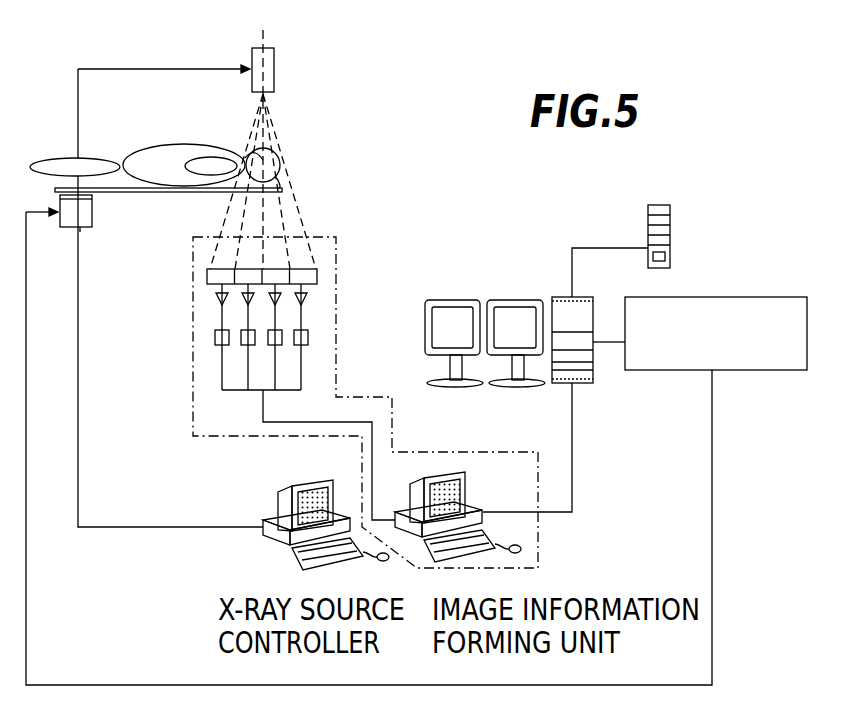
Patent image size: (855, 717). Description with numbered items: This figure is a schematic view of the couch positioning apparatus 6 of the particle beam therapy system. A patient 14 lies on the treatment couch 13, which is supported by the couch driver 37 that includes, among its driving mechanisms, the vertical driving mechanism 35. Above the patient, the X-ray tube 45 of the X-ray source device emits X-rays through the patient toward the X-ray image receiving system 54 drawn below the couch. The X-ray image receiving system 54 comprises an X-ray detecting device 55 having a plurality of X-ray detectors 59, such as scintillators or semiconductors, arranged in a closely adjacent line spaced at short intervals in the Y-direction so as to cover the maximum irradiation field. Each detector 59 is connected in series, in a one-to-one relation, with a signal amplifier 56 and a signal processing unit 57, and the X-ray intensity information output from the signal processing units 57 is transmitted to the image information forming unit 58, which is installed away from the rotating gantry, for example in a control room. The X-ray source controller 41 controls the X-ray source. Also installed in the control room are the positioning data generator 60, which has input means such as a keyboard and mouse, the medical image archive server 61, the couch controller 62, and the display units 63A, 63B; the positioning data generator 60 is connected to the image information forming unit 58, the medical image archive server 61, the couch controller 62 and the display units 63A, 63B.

The couch positioning apparatus 6 is at (356, 219).
The treatment couch 13 is at (282, 190).
The patient 14 is at (140, 148).
The vertical driving mechanism 35 is at (93, 212).
The couch driver 37 is at (80, 228).
The X-ray source controller 41 is at (275, 546).
The X-ray tube 45 is at (276, 62).
The X-ray image receiving system 54 is at (268, 295).
The X-ray detecting device 55 is at (307, 282).
The signal amplifiers 56 is at (305, 302).
The signal processing units 57 is at (217, 337).
The image information forming unit 58 is at (465, 486).
The X-ray detectors 59 is at (307, 277).
The positioning data generator 60 is at (595, 372).
The medical image archive server 61 is at (670, 230).
The couch controller 62 is at (755, 371).
The display unit 63A is at (460, 300).
The display unit 63B is at (518, 300).